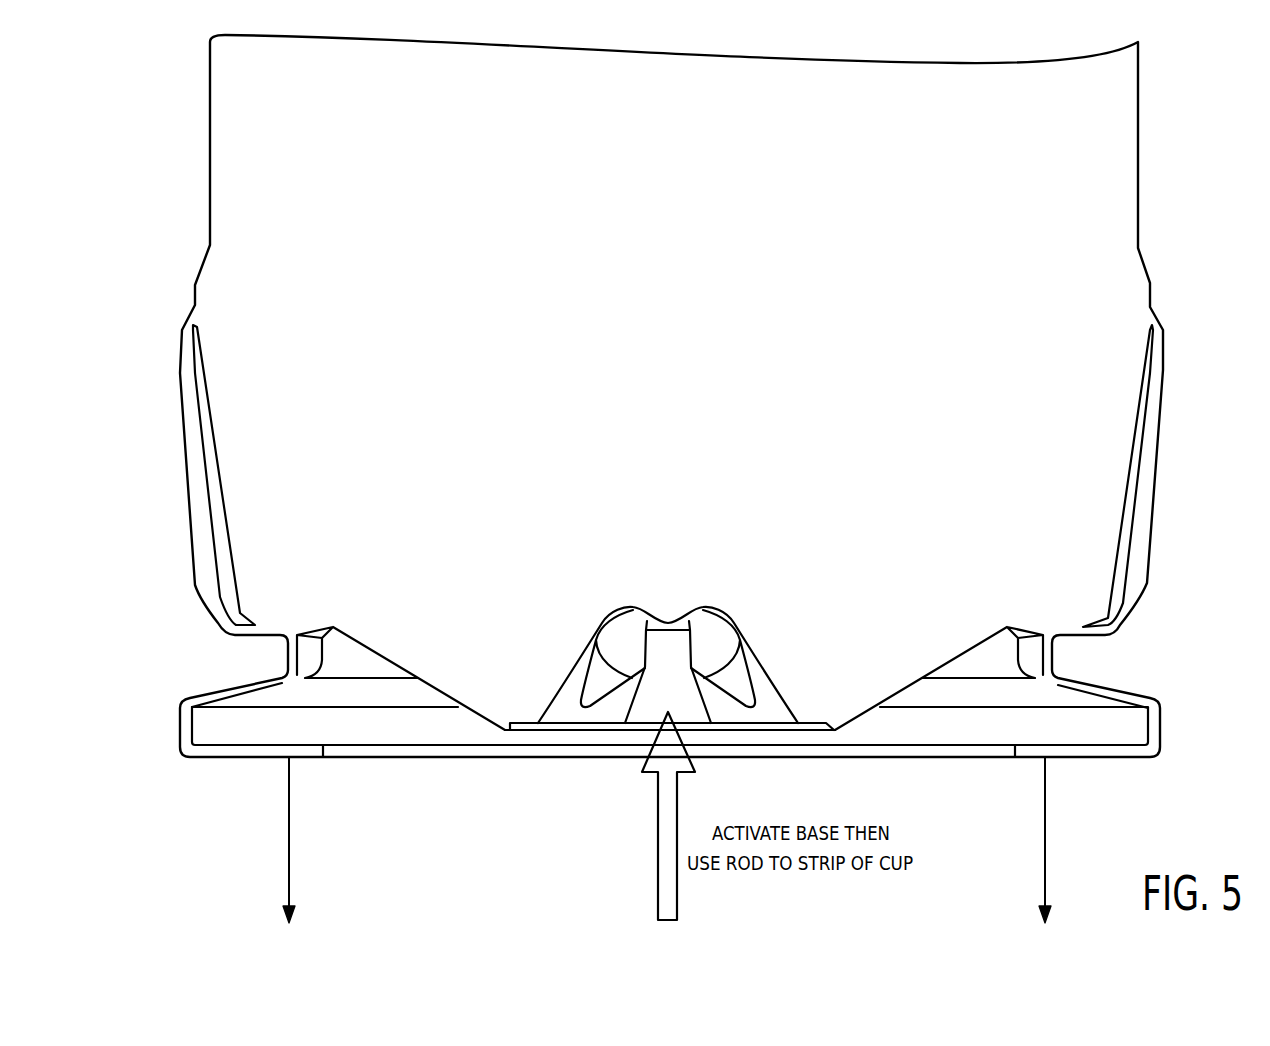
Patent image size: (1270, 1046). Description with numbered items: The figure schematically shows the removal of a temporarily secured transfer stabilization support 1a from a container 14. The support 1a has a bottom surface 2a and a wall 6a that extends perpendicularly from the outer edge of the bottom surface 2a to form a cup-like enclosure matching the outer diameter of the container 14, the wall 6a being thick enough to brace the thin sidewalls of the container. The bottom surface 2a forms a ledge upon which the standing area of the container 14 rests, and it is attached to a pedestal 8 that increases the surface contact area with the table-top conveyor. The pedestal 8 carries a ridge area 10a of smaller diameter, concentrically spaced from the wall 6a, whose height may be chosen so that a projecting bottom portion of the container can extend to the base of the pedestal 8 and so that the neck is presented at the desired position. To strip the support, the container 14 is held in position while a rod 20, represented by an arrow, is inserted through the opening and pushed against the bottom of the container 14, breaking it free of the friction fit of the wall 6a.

The container 14 is at (228, 200).
The transfer stabilization support 1a is at (203, 490).
The wall 6a is at (1137, 493).
The ridge area 10a is at (297, 650).
The bottom surface 2a is at (1088, 632).
The pedestal 8 is at (242, 750).
The rod 20 is at (658, 837).